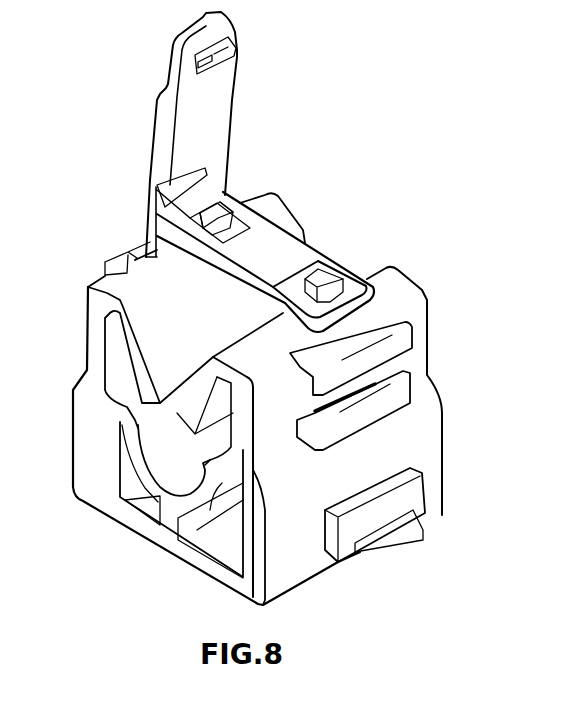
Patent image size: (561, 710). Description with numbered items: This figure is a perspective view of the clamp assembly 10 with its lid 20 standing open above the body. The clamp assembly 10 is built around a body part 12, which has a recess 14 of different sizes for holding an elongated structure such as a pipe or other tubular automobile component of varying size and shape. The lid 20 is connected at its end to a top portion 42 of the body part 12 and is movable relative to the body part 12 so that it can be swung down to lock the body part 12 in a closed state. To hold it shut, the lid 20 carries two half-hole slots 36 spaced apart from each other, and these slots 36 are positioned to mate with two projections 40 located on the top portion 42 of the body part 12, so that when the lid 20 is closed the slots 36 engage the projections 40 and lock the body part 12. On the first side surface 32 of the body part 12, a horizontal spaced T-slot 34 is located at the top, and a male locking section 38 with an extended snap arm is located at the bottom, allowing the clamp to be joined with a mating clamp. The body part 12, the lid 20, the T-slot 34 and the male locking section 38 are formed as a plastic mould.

The clamp assembly 10 is at (332, 192).
The body part 12 is at (95, 313).
The recess 14 is at (183, 453).
The lid 20 is at (218, 143).
The first side surface 32 is at (423, 432).
The horizontal spaced T-slot 34 is at (418, 382).
The half-hole slots 36 is at (171, 181).
The male locking section 38 is at (405, 508).
The projections 40 is at (339, 274).
The top portion 42 is at (133, 268).